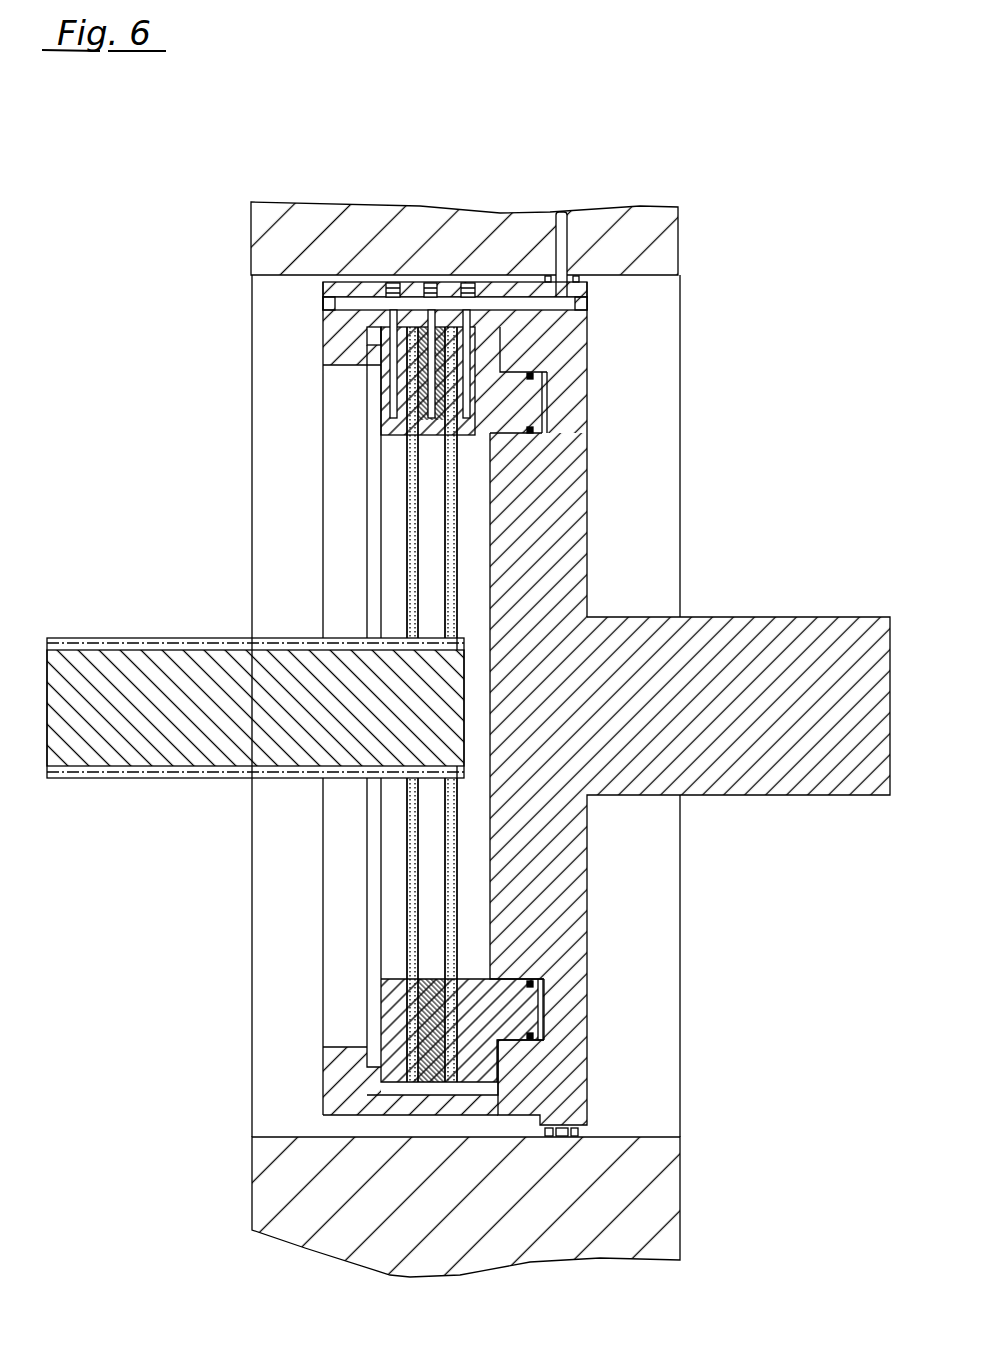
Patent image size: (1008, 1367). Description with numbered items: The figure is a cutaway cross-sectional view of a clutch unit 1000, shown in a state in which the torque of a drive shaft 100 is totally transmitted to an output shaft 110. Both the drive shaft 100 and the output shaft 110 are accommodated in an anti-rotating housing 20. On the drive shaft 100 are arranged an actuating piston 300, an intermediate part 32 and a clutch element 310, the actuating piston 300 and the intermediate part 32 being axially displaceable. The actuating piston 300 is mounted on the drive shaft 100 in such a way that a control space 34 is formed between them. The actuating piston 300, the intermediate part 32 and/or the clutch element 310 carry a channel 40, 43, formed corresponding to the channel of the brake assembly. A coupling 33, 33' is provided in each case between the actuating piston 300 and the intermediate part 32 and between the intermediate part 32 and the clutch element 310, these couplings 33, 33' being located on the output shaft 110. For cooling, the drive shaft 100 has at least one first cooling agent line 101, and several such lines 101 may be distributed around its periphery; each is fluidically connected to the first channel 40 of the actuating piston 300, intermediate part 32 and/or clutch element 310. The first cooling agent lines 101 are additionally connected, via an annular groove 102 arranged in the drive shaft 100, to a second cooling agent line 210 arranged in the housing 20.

The housing 20 is at (464, 202).
The intermediate part 32 is at (507, 258).
The first channel 40 is at (347, 590).
The second cooling agent line 210 is at (649, 207).
The clutch unit 1000 is at (545, 668).
The first cooling agent line 101 is at (555, 698).
The actuating piston 300 is at (659, 412).
The clutch element 310 is at (288, 375).
The channel 43 is at (272, 704).
The coupling 33 is at (277, 704).
The coupling 33' is at (620, 704).
The output shaft 110 is at (255, 757).
The drive shaft 100 is at (690, 703).
The control space 34 is at (594, 704).
The annular groove 102 is at (545, 1194).